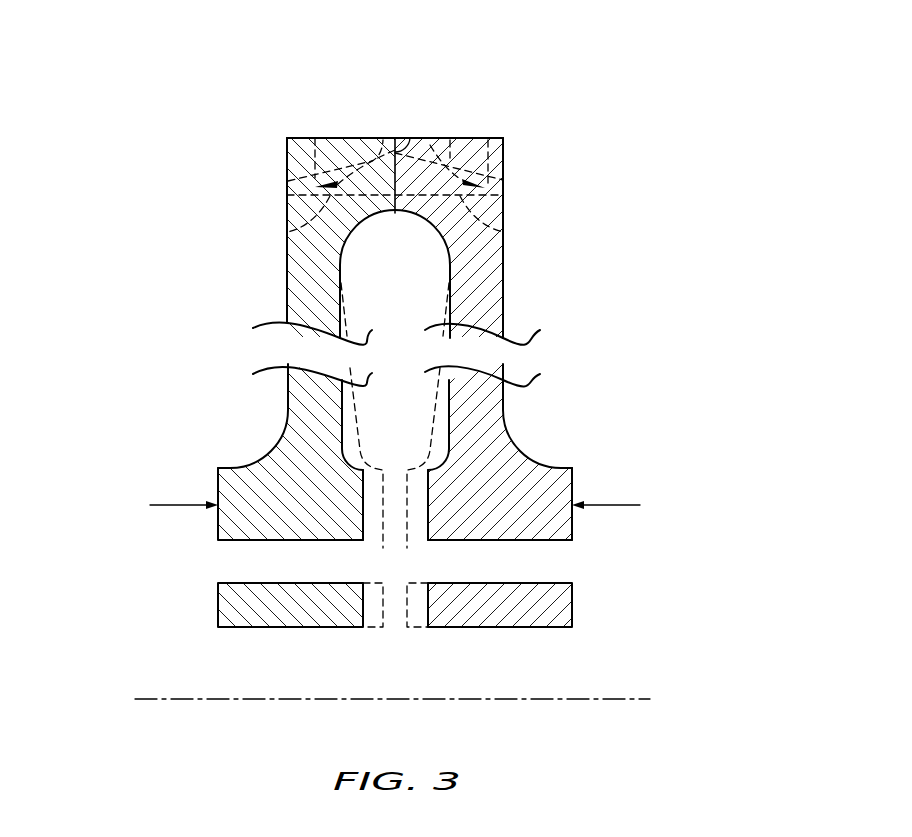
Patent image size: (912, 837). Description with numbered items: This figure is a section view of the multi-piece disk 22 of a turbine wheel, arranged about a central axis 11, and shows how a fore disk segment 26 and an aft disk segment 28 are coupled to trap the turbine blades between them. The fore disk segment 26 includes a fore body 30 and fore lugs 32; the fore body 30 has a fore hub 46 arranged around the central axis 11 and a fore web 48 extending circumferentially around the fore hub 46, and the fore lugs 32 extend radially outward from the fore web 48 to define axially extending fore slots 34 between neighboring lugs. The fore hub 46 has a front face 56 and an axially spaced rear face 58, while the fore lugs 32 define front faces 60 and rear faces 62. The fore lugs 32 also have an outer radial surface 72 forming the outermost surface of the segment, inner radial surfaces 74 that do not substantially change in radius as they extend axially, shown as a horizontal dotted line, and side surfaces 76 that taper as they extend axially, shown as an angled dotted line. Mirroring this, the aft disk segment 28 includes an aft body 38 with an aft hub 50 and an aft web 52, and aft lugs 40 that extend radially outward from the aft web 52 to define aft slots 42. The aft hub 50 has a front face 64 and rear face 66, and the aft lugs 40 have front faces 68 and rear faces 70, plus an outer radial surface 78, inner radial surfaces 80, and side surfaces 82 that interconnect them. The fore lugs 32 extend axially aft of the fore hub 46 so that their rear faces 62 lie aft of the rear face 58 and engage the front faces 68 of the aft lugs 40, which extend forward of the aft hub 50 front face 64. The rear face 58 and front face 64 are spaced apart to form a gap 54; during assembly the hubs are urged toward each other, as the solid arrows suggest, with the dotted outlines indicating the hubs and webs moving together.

The central axis 11 is at (173, 697).
The multi-piece disk 22 is at (116, 129).
The fore disk segment 26 is at (278, 268).
The aft disk segment 28 is at (516, 302).
The fore body 30 is at (178, 393).
The fore lugs 32 is at (278, 163).
The fore slots 34 is at (380, 137).
The aft body 38 is at (621, 378).
The aft lugs 40 is at (514, 155).
The aft slots 42 is at (447, 137).
The fore hub 46 is at (225, 458).
The fore web 48 is at (278, 302).
The aft hub 50 is at (584, 478).
The aft web 52 is at (516, 402).
The gap 54 is at (400, 547).
The front face of the fore hub 56 is at (218, 482).
The rear face of the fore hub 58 is at (363, 512).
The front faces of the fore lugs 60 is at (287, 142).
The rear faces of the fore lugs 62 is at (410, 138).
The front face of the aft hub 64 is at (428, 512).
The rear face of the aft hub 66 is at (572, 535).
The front faces of the aft lugs 68 is at (393, 210).
The rear faces of the aft lugs 70 is at (503, 165).
The outer radial surface of the fore lugs 72 is at (345, 137).
The inner radial surfaces of the fore lugs 74 is at (287, 222).
The side surfaces of the fore lugs 76 is at (316, 137).
The outer radial surface of the aft lugs 78 is at (478, 137).
The inner radial surfaces of the aft lugs 80 is at (503, 228).
The side surfaces of the aft lugs 82 is at (490, 137).